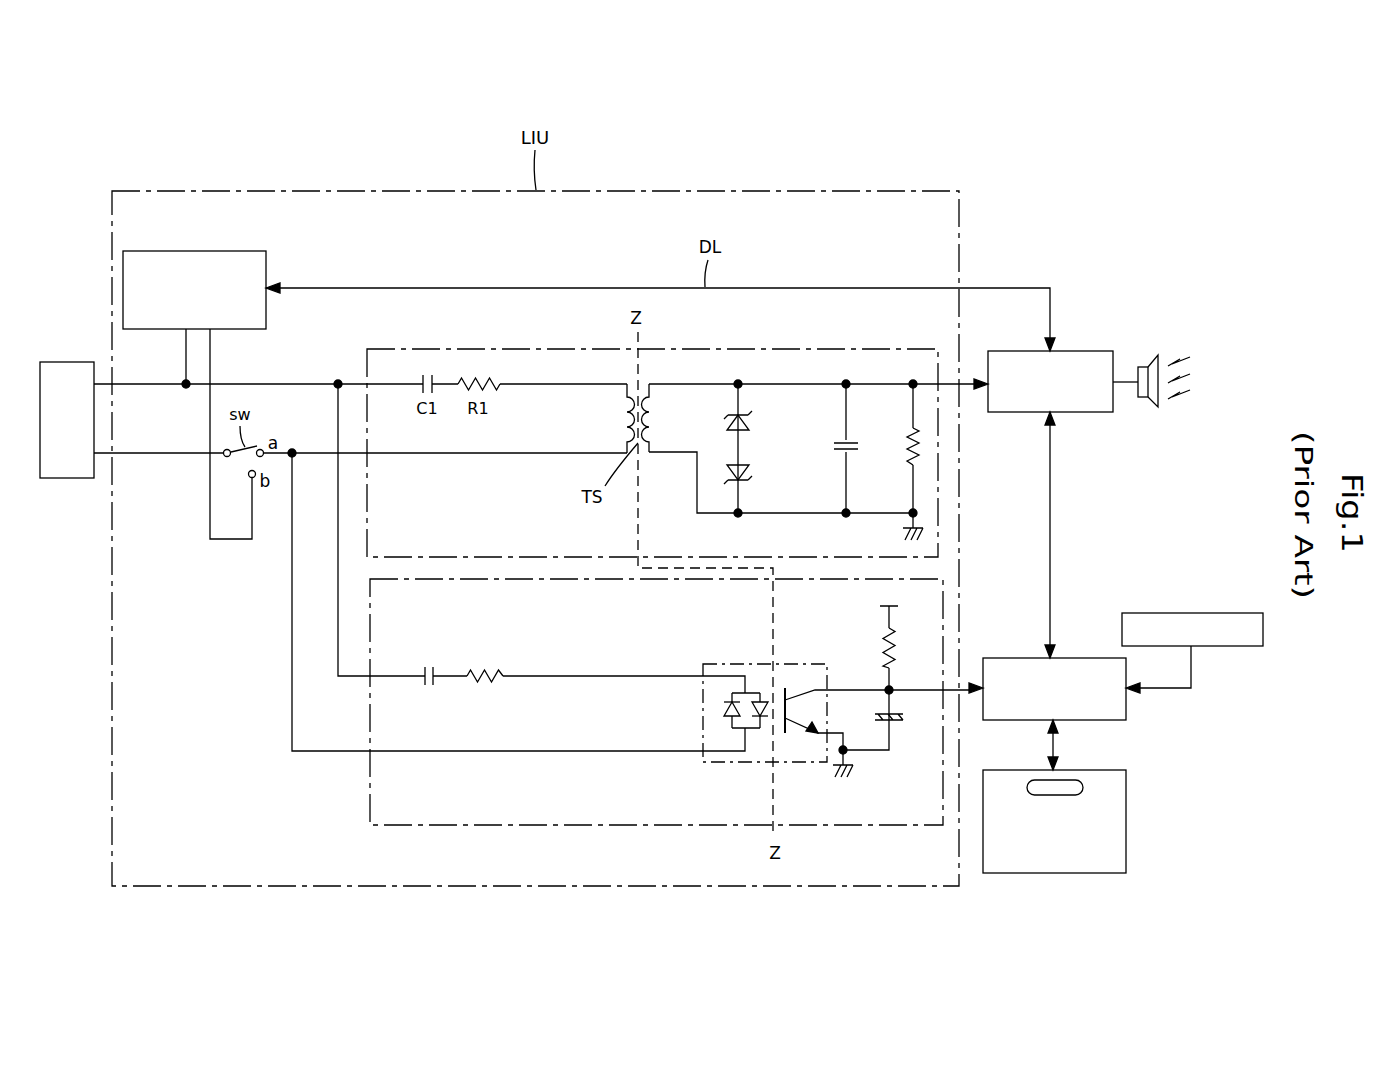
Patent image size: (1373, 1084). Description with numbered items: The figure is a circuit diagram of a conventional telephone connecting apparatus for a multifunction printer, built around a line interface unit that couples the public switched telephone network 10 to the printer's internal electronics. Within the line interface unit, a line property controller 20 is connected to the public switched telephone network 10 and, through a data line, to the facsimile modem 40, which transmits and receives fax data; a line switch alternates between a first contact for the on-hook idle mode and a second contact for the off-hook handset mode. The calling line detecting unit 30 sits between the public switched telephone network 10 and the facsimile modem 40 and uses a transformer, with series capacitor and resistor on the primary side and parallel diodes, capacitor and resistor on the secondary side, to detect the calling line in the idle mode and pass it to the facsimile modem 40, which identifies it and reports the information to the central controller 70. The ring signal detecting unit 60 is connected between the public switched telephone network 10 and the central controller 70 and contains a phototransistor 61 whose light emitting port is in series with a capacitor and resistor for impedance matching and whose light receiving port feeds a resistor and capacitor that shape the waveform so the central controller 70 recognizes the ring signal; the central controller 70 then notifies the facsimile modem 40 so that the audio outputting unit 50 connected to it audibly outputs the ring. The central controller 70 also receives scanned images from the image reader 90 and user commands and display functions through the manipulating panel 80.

The public switched telephone network 10 is at (68, 362).
The line property controller 20 is at (234, 251).
The calling line detecting unit 30 is at (893, 348).
The facsimile modem 40 is at (1095, 351).
The audio outputting unit 50 is at (1158, 360).
The ring signal detecting unit 60 is at (637, 626).
The phototransistor 61 is at (753, 664).
The central controller 70 is at (1085, 658).
The manipulating panel 80 is at (1095, 770).
The image reader 90 is at (1207, 613).